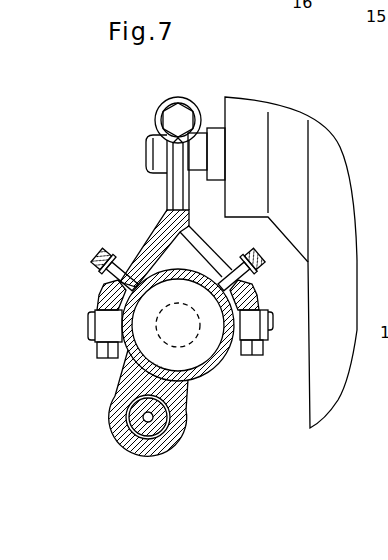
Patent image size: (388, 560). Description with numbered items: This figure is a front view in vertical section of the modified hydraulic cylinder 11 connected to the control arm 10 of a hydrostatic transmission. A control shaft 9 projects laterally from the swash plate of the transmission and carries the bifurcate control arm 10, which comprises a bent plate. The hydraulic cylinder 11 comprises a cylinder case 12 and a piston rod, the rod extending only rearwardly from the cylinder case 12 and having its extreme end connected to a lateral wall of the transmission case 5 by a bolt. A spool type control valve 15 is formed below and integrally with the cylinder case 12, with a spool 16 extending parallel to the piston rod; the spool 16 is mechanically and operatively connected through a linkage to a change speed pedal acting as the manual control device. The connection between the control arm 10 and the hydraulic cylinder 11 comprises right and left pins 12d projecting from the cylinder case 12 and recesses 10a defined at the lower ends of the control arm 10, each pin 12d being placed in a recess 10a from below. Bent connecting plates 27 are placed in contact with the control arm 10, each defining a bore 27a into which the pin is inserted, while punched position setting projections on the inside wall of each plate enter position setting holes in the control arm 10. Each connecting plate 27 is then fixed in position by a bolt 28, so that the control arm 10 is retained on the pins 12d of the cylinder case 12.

The transmission case 5 is at (322, 138).
The control shaft 9 is at (147, 142).
The control arm 10 is at (167, 184).
The recesses 10a is at (109, 361).
The hydraulic cylinder 11 is at (160, 266).
The cylinder case 12 is at (199, 383).
The pins 12d is at (89, 320).
The spool type control valve 15 is at (112, 431).
The spool 16 is at (149, 428).
The connecting plates 27 is at (98, 288).
The bore 27a is at (100, 338).
The bolt 28 is at (107, 256).